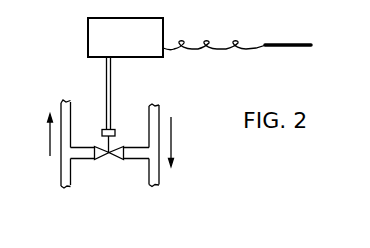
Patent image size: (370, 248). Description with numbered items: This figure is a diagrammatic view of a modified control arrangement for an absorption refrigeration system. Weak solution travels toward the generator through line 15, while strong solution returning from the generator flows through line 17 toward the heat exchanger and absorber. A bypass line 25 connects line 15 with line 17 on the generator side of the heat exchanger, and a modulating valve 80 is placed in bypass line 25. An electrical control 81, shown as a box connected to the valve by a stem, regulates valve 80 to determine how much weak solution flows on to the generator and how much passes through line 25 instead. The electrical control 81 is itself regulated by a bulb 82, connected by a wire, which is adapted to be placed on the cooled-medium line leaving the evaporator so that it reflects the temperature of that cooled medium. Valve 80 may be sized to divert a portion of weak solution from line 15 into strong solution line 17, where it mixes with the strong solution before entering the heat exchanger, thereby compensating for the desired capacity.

The line 15 is at (62, 112).
The line 17 is at (155, 118).
The bypass line 25 is at (136, 158).
The modulating valve 80 is at (98, 156).
The electrical control 81 is at (125, 74).
The bulb 82 is at (298, 43).